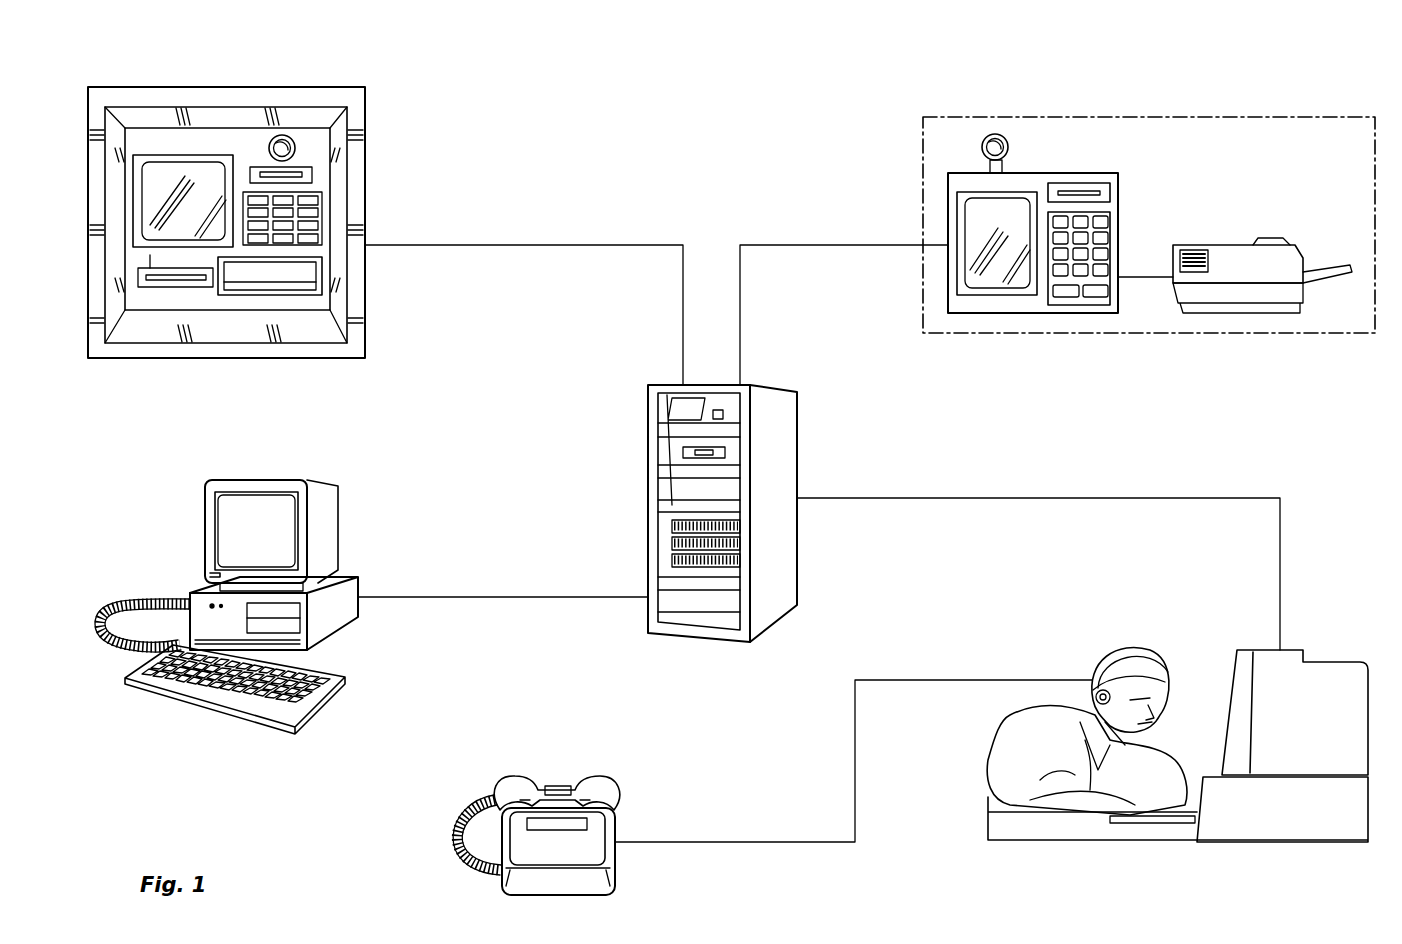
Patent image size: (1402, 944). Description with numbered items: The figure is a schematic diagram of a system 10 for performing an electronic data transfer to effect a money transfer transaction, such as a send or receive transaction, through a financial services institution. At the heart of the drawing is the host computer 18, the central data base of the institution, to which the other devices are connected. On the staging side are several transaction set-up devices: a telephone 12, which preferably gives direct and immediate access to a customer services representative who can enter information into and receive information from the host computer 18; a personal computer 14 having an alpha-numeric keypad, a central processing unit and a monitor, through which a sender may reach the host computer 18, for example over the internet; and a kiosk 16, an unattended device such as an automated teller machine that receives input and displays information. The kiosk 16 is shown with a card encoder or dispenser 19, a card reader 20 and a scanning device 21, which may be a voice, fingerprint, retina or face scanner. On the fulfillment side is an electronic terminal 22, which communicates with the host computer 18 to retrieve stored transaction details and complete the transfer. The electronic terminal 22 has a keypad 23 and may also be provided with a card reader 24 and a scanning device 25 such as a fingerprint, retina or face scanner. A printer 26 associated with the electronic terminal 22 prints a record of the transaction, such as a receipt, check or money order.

The system 10 is at (352, 52).
The telephone 12 is at (650, 778).
The personal computer 14 is at (383, 534).
The kiosk 16 is at (282, 222).
The host computer 18 is at (797, 433).
The card encoder or dispenser 19 is at (322, 282).
The card reader 20 is at (312, 176).
The scanning device 21 is at (296, 147).
The electronic terminal 22 is at (905, 158).
The keypad 23 is at (1072, 228).
The card reader 24 is at (1097, 183).
The scanning device 25 is at (1003, 135).
The printer 26 is at (1220, 313).